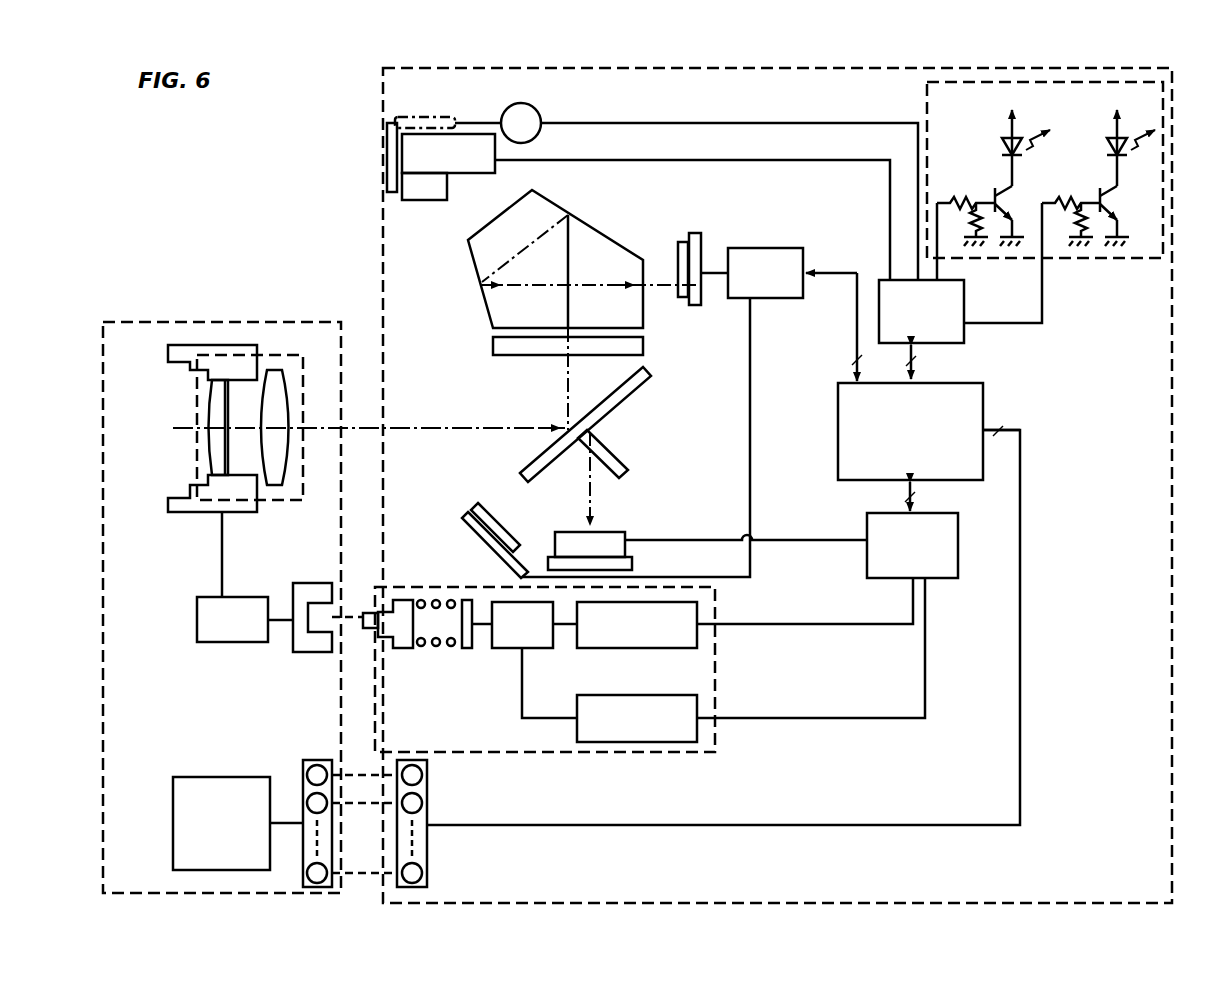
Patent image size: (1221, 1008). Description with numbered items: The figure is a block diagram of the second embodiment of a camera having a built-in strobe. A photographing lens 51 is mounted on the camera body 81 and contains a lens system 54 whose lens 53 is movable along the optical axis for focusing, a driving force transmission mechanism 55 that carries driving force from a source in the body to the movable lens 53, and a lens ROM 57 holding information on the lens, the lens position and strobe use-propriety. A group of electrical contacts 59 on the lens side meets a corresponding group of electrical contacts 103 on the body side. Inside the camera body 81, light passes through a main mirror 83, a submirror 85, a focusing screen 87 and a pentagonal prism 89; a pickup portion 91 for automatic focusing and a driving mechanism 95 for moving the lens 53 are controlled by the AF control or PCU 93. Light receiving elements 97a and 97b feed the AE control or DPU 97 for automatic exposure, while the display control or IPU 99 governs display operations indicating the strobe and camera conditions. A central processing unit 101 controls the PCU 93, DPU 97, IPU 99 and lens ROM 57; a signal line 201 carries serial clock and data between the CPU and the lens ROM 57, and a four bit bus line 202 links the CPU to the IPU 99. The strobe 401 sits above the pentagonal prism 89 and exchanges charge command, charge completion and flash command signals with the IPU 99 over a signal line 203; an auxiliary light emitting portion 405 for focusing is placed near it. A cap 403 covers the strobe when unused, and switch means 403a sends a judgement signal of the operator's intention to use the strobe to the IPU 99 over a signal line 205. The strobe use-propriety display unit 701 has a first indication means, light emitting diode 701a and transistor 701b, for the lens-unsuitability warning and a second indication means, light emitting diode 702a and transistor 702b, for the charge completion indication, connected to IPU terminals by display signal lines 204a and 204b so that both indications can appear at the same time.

The camera body 81 is at (381, 88).
The photographing lens 51 is at (272, 320).
The lens 53 is at (210, 447).
The lens system 54 is at (195, 393).
The driving force transmission mechanism 55 is at (293, 650).
The lens ROM 57 is at (226, 777).
The group of electrical contacts 59 is at (318, 760).
The group of electrical contacts 103 is at (427, 776).
The main mirror 83 is at (648, 380).
The submirror 85 is at (630, 456).
The focusing screen 87 is at (645, 345).
The pentagonal prism 89 is at (608, 236).
The pickup portion 91 is at (623, 532).
The AF control (PCU) 93 is at (958, 540).
The driving mechanism 95 is at (717, 652).
The AE control (DPU) 97 is at (795, 248).
The light receiving element 97a is at (685, 242).
The light receiving element 97b is at (515, 526).
The display control (IPU) 99 is at (964, 303).
The central processing unit (CPU) 101 is at (976, 383).
The signal line 201 is at (788, 825).
The bus line 202 is at (915, 362).
The signal line 203 is at (777, 161).
The signal line 205 is at (708, 122).
The signal line 204a is at (937, 266).
The signal line 204b is at (1042, 294).
The strobe 401 is at (468, 174).
The cap 403 is at (385, 137).
The switch means 403a is at (537, 112).
The auxiliary light emitting portion 405 is at (428, 194).
The strobe use-propriety display unit 701 is at (927, 112).
The light emitting diode 701a is at (1005, 132).
The transistor 701b is at (995, 196).
The light emitting diode 702a is at (1110, 132).
The transistor 702b is at (1100, 196).